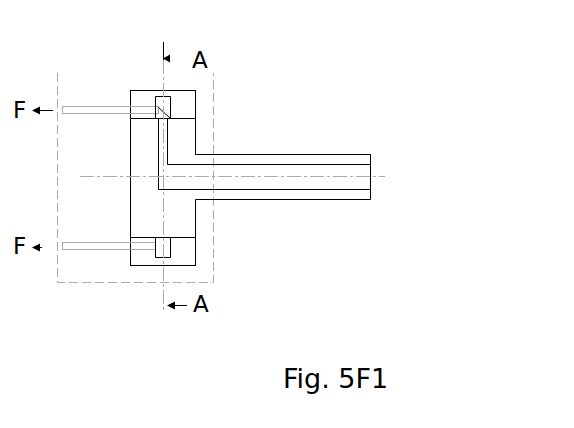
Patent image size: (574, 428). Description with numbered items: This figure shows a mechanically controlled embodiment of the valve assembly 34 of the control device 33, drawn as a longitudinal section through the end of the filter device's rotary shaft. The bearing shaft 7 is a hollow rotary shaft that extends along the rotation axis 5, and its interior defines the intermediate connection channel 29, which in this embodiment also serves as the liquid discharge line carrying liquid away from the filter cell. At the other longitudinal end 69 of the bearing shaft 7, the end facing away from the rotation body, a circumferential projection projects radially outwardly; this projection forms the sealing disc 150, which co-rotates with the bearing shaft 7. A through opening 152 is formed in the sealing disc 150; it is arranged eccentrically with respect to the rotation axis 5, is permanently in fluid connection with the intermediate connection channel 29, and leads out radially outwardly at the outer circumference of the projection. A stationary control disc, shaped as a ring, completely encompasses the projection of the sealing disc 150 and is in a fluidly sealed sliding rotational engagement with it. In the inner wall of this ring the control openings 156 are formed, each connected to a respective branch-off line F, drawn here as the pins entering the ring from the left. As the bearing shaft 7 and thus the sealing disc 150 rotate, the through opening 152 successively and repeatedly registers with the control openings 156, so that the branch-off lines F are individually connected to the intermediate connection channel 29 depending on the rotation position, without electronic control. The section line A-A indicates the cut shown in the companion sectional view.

The rotation axis 5 is at (362, 175).
The bearing shaft 7 is at (314, 161).
The intermediate connection channel 29 is at (333, 182).
The control device 33 is at (198, 103).
The valve assembly 34 is at (130, 262).
The other longitudinal end 69 is at (230, 163).
The sealing disc 150 is at (177, 208).
The through opening 152 is at (194, 91).
The control openings 156 is at (157, 110).